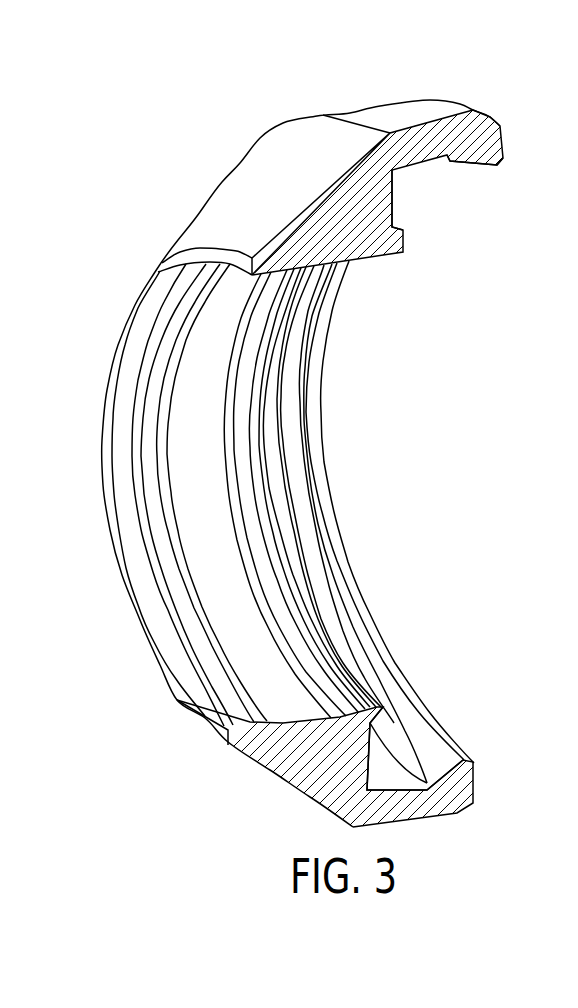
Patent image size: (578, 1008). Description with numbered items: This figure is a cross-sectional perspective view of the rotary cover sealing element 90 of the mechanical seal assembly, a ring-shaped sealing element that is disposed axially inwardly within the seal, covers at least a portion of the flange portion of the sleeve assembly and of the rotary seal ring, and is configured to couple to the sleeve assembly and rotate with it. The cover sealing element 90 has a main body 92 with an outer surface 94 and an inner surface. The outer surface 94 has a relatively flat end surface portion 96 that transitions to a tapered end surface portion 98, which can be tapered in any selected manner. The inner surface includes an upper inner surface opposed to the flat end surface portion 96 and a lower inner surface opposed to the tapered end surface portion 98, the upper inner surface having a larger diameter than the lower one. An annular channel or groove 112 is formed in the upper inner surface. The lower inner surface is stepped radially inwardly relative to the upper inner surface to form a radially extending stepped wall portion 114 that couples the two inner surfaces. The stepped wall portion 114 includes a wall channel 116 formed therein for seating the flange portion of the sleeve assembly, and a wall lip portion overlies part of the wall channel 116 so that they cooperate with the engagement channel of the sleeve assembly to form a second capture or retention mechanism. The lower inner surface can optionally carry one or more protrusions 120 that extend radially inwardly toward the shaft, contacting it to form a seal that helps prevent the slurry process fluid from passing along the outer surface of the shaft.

The cover sealing element 90 is at (447, 357).
The main body 92 is at (445, 103).
The outer surface 94 is at (289, 147).
The flat end surface portion 96 is at (377, 117).
The tapered end surface portion 98 is at (214, 198).
The annular channel or groove 112 is at (458, 160).
The stepped wall portion 114 is at (402, 214).
The wall channel 116 is at (423, 783).
The protrusions 120 is at (177, 700).